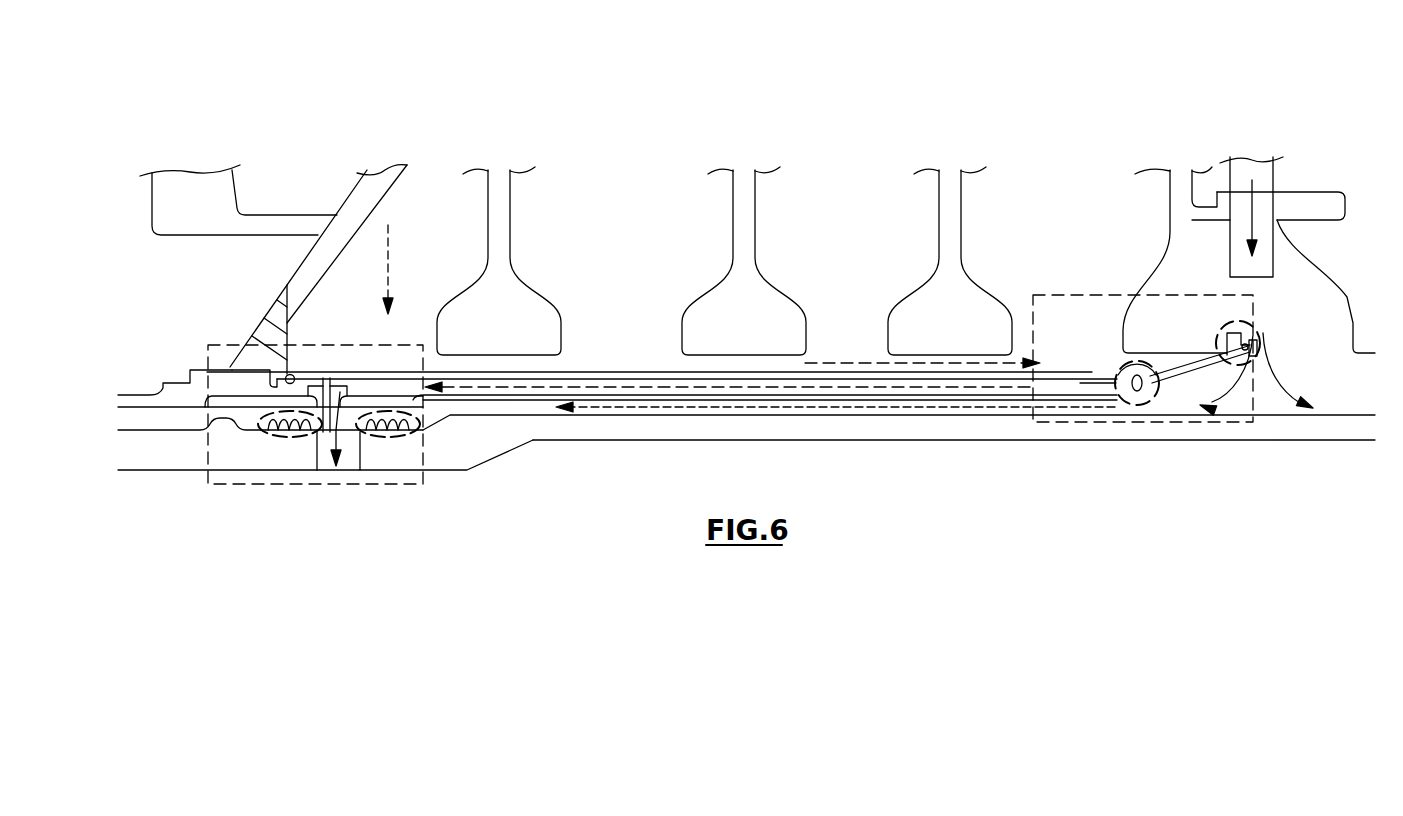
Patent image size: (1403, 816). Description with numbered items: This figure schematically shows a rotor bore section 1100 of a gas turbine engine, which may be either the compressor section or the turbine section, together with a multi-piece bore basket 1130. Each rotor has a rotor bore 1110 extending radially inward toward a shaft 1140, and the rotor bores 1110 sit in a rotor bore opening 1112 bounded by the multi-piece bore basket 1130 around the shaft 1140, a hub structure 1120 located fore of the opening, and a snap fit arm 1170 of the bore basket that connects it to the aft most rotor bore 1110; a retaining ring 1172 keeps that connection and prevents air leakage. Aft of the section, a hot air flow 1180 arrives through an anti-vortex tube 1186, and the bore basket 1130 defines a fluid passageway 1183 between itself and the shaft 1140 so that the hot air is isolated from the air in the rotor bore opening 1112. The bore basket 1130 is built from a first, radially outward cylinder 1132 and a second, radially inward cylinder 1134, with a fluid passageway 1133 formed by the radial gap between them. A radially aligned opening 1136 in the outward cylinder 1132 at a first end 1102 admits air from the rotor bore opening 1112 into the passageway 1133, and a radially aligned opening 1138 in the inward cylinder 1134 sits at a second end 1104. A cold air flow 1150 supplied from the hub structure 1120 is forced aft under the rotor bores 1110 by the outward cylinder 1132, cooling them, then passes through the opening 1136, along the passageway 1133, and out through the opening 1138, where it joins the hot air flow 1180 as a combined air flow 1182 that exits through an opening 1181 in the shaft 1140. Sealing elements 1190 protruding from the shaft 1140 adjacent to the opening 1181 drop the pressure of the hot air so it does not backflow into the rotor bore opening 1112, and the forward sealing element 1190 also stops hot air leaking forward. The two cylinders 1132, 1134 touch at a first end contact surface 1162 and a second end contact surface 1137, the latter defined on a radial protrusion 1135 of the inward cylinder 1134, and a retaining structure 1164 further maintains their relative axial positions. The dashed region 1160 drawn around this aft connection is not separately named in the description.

The rotor bore section 1100 is at (940, 72).
The first end 1102 is at (1068, 424).
The second end 1104 is at (237, 348).
The rotor bore 1110 is at (498, 250).
The rotor bore opening 1112 is at (655, 190).
The hub structure 1120 is at (372, 200).
The multi-piece bore basket 1130 is at (322, 378).
The radially outward cylinder 1132 is at (641, 372).
The fluid passageway 1133 is at (650, 380).
The radially inward cylinder 1134 is at (560, 397).
The radial protrusion 1135 is at (248, 380).
The radially aligned opening 1136 is at (1093, 385).
The contact surface 1137 is at (286, 297).
The radially aligned opening 1138 is at (308, 365).
The shaft 1140 is at (533, 440).
The cold air flow 1150 is at (391, 266).
The bypass region 1160 is at (1146, 300).
The contact surface 1162 is at (1120, 397).
The retaining structure 1164 is at (1147, 397).
The snap fit arm 1170 is at (1250, 322).
The retaining ring 1172 is at (1258, 350).
The hot air flow 1180 is at (1252, 228).
The opening 1181 is at (353, 443).
The combined air flow 1182 is at (343, 445).
The fluid passageway 1183 is at (532, 405).
The anti-vortex tube 1186 is at (1278, 218).
The sealing elements 1190 is at (290, 440).